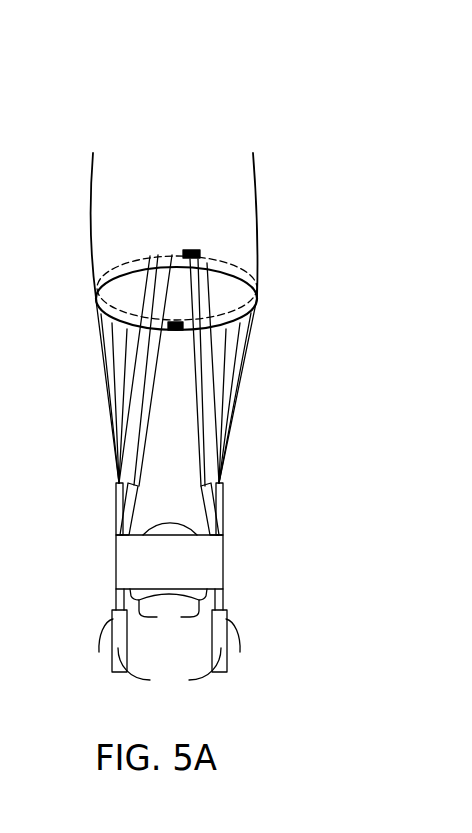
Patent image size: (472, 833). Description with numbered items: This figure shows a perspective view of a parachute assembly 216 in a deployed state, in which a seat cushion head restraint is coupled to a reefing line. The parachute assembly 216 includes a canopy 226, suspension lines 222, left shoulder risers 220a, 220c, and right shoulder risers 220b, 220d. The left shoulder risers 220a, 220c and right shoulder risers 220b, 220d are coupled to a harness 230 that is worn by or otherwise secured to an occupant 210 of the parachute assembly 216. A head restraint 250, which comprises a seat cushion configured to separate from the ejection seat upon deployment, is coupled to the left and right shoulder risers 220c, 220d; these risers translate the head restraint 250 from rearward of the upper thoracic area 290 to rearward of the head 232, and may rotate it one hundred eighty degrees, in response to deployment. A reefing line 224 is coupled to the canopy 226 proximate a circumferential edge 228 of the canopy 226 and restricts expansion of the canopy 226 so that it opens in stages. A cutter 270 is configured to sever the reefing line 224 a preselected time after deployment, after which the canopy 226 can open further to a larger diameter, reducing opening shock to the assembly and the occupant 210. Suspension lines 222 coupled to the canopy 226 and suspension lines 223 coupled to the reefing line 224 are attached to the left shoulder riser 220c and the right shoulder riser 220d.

The parachute assembly 216 is at (56, 175).
The canopy 226 is at (184, 195).
The reefing line 224 is at (148, 256).
The cutter 270 is at (202, 242).
The circumferential edge 228 is at (176, 331).
The suspension lines 222 is at (108, 400).
The suspension lines 223 is at (202, 468).
The left shoulder riser 220a is at (117, 502).
The right shoulder riser 220b is at (218, 494).
The left shoulder riser 220c is at (120, 530).
The right shoulder riser 220d is at (214, 527).
The head 232 is at (162, 525).
The head restraint 250 is at (180, 569).
The occupant 210 is at (241, 585).
The upper thoracic area 290 is at (83, 625).
The harness 230 is at (169, 668).